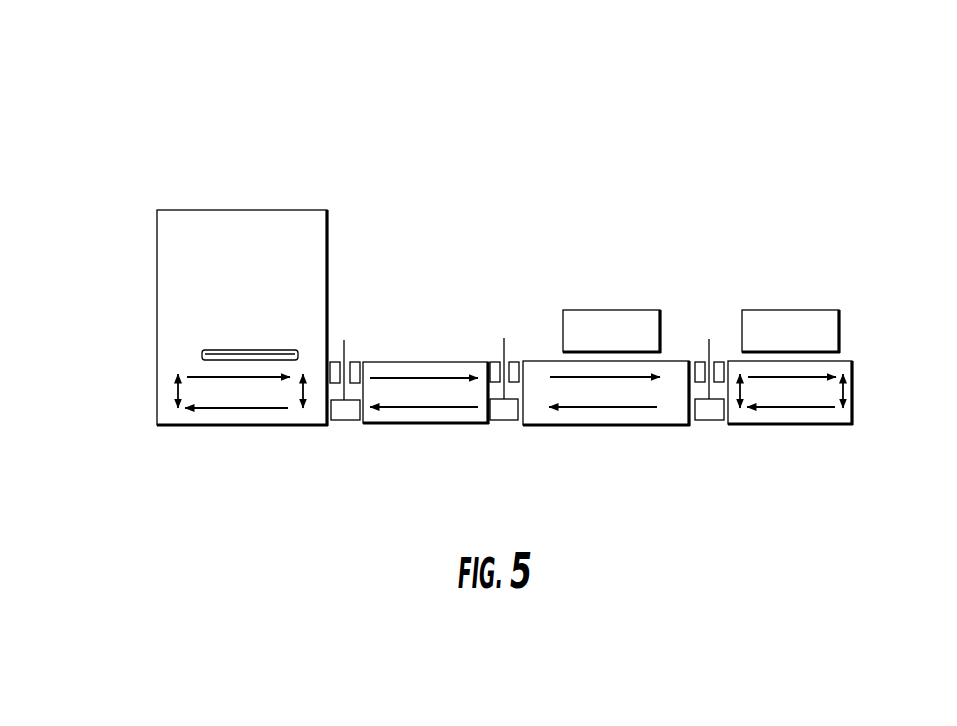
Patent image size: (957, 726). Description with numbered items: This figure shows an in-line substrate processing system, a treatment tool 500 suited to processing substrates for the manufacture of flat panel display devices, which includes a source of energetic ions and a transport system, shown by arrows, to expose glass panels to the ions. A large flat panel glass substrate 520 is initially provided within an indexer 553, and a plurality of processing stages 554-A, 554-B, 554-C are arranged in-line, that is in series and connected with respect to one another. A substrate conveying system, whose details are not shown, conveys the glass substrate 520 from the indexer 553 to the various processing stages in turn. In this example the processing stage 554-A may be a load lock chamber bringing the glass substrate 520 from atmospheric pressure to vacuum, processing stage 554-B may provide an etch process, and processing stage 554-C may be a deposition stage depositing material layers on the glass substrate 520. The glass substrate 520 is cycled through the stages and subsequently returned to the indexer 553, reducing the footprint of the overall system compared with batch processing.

The treatment tool 500 is at (116, 116).
The indexer 553 is at (249, 184).
The glass substrate 520 is at (202, 354).
The processing stage 554-A is at (421, 183).
The processing stage 554-B is at (603, 183).
The processing stage 554-C is at (794, 183).